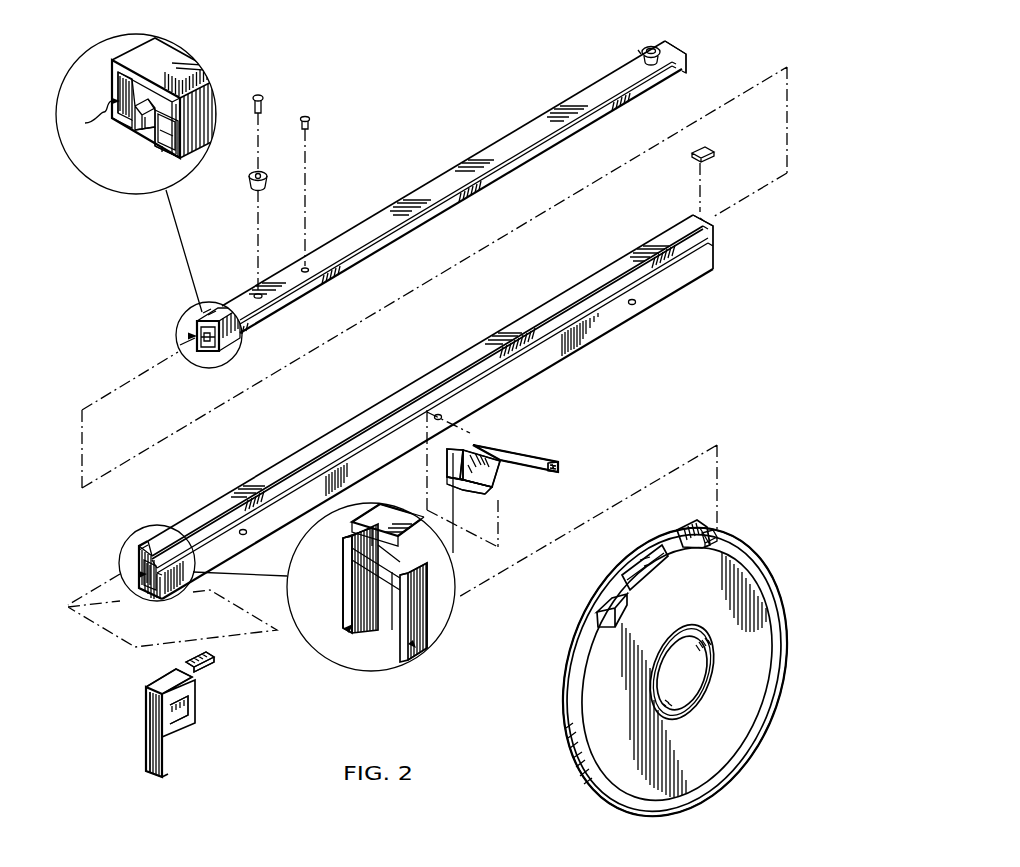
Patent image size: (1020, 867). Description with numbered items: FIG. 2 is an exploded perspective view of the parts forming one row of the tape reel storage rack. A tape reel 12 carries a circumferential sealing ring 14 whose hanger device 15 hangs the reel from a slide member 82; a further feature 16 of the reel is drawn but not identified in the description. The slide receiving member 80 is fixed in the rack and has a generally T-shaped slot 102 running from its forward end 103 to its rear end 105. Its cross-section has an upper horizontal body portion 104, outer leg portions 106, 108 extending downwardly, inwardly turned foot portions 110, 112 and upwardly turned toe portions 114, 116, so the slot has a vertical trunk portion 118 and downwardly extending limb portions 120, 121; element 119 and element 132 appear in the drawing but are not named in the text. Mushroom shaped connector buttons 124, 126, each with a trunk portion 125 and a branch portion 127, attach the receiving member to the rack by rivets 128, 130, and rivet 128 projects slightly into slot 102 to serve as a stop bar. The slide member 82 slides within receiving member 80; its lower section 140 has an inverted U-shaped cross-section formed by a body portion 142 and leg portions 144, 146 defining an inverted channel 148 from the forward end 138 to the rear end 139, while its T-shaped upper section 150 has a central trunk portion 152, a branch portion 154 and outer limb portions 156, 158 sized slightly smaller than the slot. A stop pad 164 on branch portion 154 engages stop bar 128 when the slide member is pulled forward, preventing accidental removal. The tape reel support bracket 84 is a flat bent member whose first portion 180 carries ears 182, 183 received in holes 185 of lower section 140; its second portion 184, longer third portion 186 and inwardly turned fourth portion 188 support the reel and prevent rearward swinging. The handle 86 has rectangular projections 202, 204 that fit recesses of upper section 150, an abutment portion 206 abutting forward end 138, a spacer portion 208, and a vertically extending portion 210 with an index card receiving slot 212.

The tape reel 12 is at (735, 560).
The circumferential sealing ring 14 is at (762, 557).
The hanger device 15 is at (687, 520).
The rim tab 16 is at (716, 530).
The slide receiving member 80 is at (358, 240).
The slide member 82 is at (334, 432).
The tape reel support bracket 84 is at (523, 445).
The handle member 86 is at (181, 743).
The T-shaped slot 102 is at (180, 345).
The forward end 103 is at (206, 319).
The upper horizontal body portion 104 is at (150, 72).
The rear end 105 is at (680, 57).
The outer vertically extending leg portion 106 is at (110, 72).
The outer vertically extending leg portion 108 is at (183, 127).
The lower horizontally extending foot portion 110 is at (115, 120).
The lower horizontally extending foot portion 112 is at (165, 150).
The inner vertically extending toe portion 114 is at (137, 120).
The inner vertically extending toe portion 116 is at (154, 137).
The slot trunk portion 118 is at (145, 126).
The left slot 119 is at (118, 88).
The slot limb portion 120 is at (128, 117).
The slot limb portion 121 is at (163, 150).
The connector button 124 is at (268, 152).
The trunk portion 125 is at (256, 192).
The connector button 126 is at (637, 52).
The branch portion 127 is at (249, 180).
The rivet 128 is at (259, 96).
The rivet 130 is at (654, 46).
The second screw 132 is at (310, 121).
The forward end 138 is at (150, 526).
The rear end 139 is at (683, 229).
The lower section 140 is at (415, 650).
The horizontally extending body portion 142 is at (393, 600).
The vertically extending leg portion 144 is at (346, 597).
The vertically extending leg portion 146 is at (420, 650).
The inverted channel 148 is at (141, 580).
The upper section 150 is at (422, 556).
The central vertically extending trunk portion 152 is at (357, 553).
The horizontally extending branch portion 154 is at (380, 522).
The outer vertically extending limb portion 156 is at (362, 530).
The outer vertically extending limb portion 158 is at (411, 580).
The stop pad 164 is at (704, 150).
The first bracket portion 180 is at (490, 490).
The ear 182 is at (478, 494).
The ear 183 is at (449, 458).
The second bracket portion 184 is at (497, 474).
The hole 185 is at (439, 413).
The third bracket portion 186 is at (541, 455).
The fourth bracket portion 188 is at (560, 469).
The rectangular longitudinal projection 202 is at (212, 670).
The rectangular longitudinal projection 204 is at (193, 661).
The abutment portion 206 is at (198, 712).
The spacer portion 208 is at (160, 679).
The vertically extending portion 210 is at (156, 733).
The index card receiving slot 212 is at (156, 745).